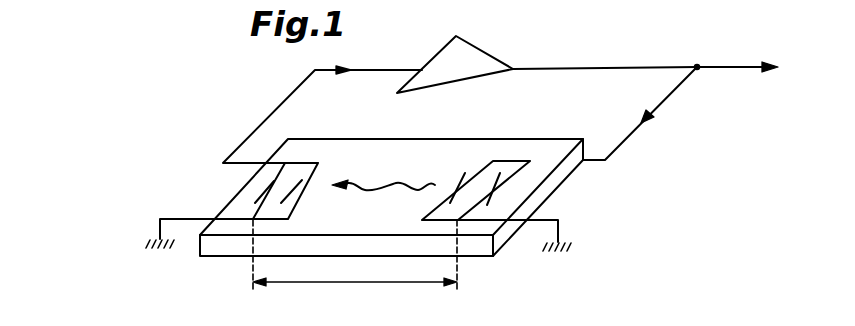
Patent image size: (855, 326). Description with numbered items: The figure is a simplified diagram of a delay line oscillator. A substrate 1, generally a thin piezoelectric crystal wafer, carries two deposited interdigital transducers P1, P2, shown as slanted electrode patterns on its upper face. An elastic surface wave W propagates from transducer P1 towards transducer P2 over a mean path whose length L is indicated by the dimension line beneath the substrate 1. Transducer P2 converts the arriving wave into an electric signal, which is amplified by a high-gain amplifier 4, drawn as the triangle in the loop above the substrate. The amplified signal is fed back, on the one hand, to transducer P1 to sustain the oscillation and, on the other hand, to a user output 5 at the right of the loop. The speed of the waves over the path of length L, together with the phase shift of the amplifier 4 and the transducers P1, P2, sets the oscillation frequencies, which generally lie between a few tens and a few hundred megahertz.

The substrate 1 is at (212, 257).
The high-gain amplifier 4 is at (443, 62).
The user output 5 is at (736, 64).
The interdigital transducer P1 is at (510, 185).
The interdigital transducer P2 is at (272, 182).
The elastic surface wave W is at (383, 176).
The length of the mean path L is at (355, 255).